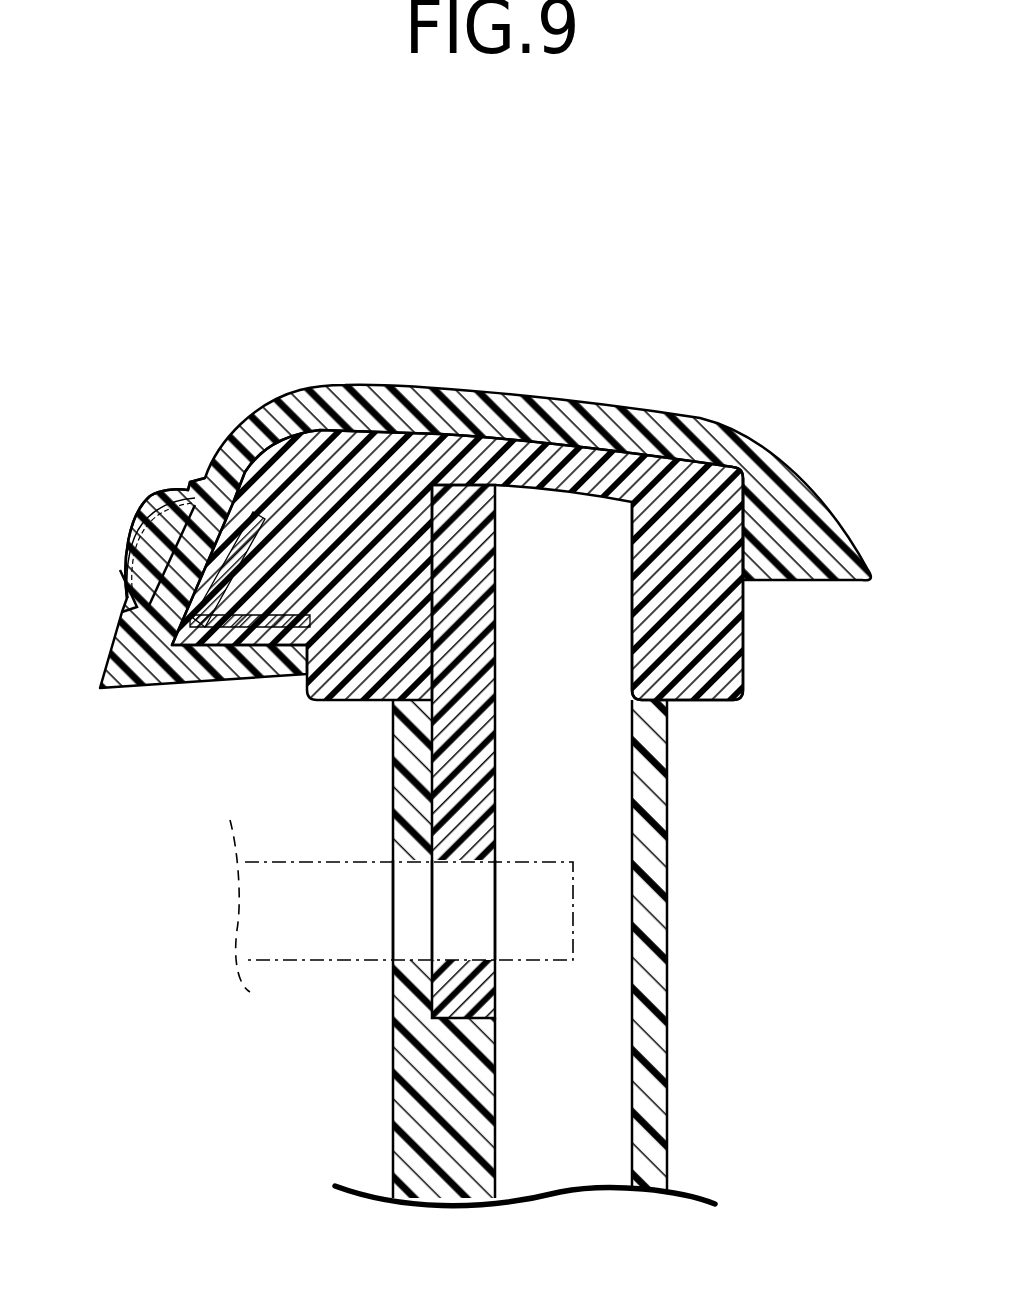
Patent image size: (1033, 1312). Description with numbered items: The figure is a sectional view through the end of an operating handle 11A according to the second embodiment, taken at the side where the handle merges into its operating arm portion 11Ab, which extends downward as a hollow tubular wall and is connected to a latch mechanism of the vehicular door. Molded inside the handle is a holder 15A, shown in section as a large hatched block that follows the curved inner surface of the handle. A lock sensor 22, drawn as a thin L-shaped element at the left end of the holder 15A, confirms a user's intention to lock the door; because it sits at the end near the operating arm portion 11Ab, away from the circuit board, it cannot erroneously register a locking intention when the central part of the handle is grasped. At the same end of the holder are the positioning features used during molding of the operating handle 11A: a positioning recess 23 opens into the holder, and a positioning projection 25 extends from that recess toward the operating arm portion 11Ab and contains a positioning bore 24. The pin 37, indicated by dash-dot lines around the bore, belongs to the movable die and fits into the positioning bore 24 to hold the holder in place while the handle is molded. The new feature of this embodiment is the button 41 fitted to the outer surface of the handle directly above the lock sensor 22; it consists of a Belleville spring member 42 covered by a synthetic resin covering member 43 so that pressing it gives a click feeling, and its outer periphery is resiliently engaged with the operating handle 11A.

The operating handle 11A is at (584, 440).
The operating arm portion 11Ab is at (657, 1050).
The holder 15A is at (353, 458).
The lock sensor 22 is at (222, 632).
The positioning recess 23 is at (633, 599).
The positioning bore 24 is at (460, 965).
The positioning projection 25 is at (450, 797).
The pin 37 is at (295, 865).
The button 41 is at (168, 484).
The Belleville spring member 42 is at (143, 518).
The covering member 43 is at (163, 493).